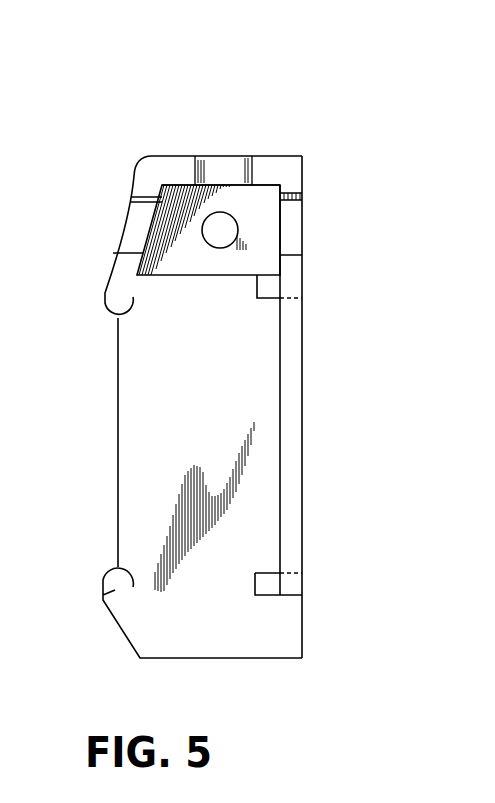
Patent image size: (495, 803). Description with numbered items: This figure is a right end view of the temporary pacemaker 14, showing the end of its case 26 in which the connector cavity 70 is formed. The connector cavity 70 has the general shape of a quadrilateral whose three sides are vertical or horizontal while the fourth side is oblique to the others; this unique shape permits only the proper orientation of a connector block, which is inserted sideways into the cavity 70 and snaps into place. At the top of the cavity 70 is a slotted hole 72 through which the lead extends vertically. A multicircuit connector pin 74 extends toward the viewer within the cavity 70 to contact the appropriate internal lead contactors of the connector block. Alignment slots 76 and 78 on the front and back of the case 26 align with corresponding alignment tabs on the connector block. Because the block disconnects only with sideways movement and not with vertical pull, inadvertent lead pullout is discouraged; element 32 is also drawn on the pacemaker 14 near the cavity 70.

The temporary pacemaker 14 is at (378, 114).
The case 26 is at (292, 452).
The latch tab 32 is at (292, 315).
The connector cavity 70 is at (200, 269).
The slotted hole 72 is at (225, 167).
The multicircuit connector pin 74 is at (232, 221).
The alignment slot 76 is at (135, 232).
The alignment slot 78 is at (290, 237).